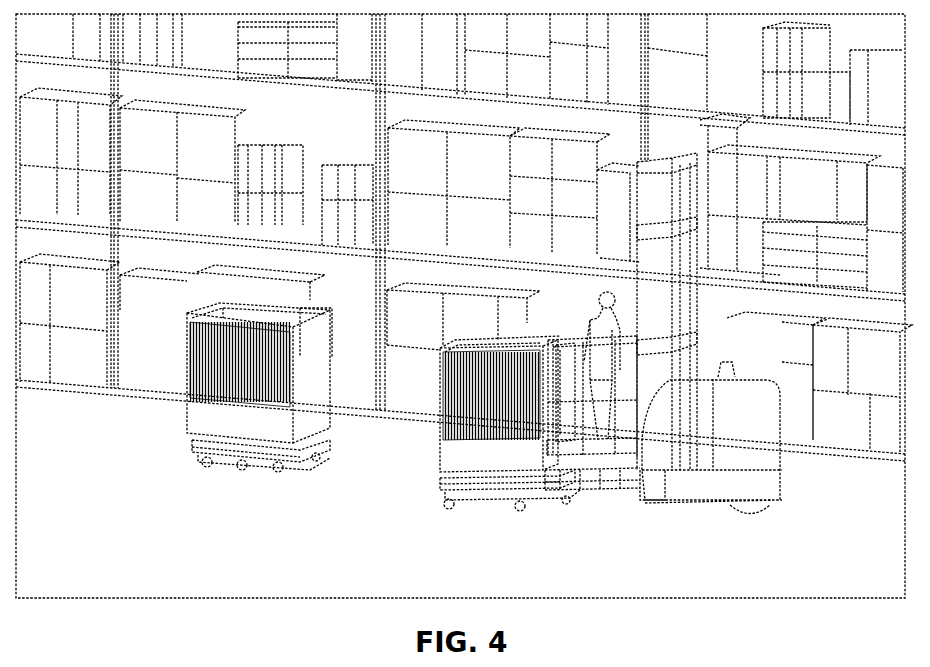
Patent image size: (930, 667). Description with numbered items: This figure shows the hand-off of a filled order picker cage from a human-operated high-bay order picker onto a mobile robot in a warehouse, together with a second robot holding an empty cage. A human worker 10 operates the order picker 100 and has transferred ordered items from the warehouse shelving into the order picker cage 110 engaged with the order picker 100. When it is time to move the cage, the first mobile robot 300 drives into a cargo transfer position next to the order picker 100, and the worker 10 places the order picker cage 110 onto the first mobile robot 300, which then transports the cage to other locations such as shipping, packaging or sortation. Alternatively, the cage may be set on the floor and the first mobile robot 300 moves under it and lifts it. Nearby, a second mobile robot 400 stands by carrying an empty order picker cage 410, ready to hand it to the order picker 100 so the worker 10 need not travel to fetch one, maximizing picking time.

The human worker 10 is at (585, 286).
The order picker 100 is at (684, 515).
The order picker cage 110 is at (440, 455).
The first mobile robot 300 is at (490, 505).
The second mobile robot 400 is at (238, 460).
The empty order picker cage 410 is at (187, 421).